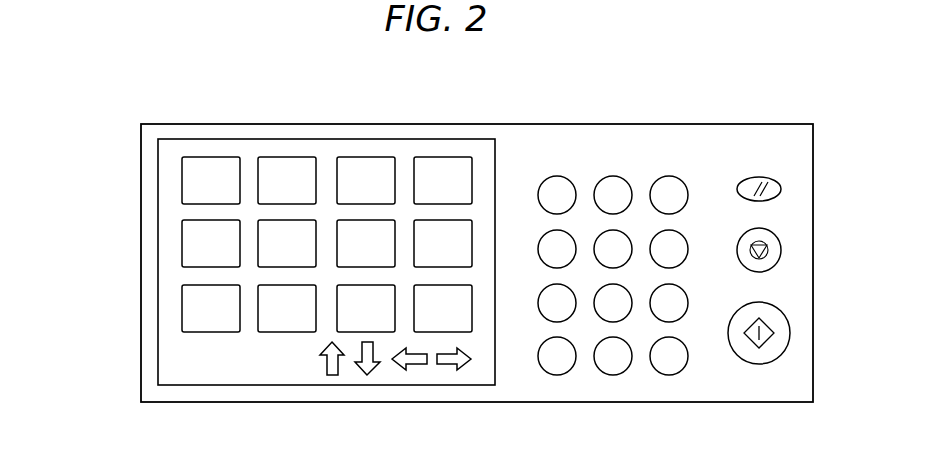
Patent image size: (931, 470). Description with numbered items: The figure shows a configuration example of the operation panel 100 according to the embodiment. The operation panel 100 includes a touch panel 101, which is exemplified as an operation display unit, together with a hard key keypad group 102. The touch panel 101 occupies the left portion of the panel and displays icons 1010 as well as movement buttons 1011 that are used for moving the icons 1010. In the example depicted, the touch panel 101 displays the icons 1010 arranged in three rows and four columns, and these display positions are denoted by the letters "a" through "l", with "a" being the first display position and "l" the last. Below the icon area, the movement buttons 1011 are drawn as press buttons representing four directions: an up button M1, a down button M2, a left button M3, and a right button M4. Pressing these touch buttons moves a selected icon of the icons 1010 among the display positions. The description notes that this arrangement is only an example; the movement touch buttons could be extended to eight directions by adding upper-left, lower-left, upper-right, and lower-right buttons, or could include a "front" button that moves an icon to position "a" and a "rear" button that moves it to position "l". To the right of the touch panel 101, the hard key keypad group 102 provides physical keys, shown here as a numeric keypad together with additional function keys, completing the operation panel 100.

The operation panel 100 is at (615, 124).
The touch panel 101 is at (370, 139).
The icons 1010 is at (127, 155).
The movement buttons 1011 is at (265, 397).
The up button M1 is at (322, 366).
The down button M2 is at (362, 376).
The left button M3 is at (415, 362).
The right button M4 is at (447, 364).
The hard key keypad group 102 is at (537, 413).